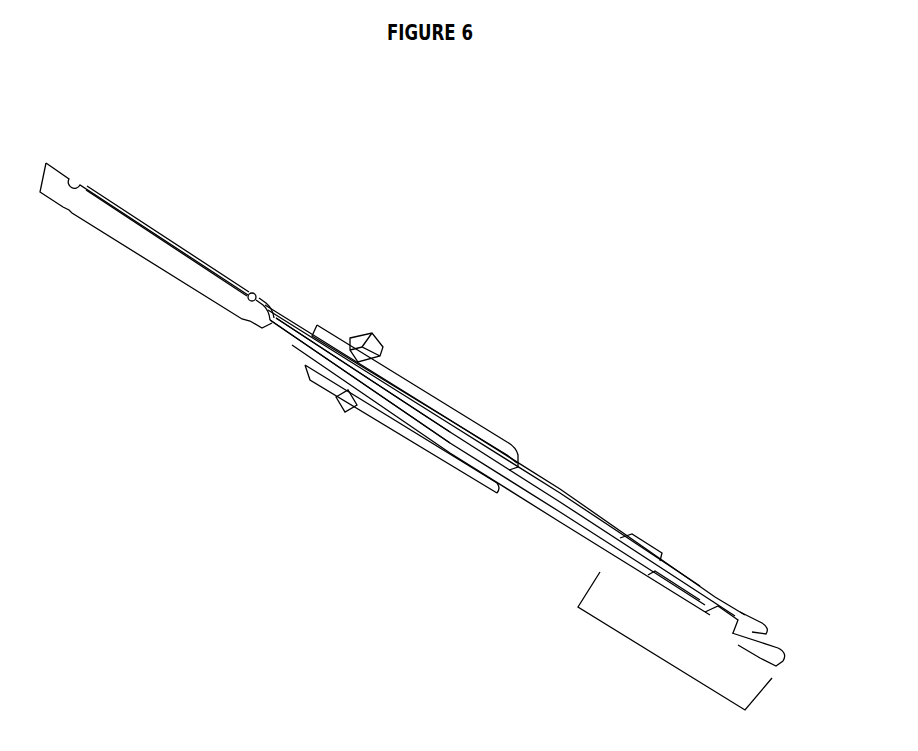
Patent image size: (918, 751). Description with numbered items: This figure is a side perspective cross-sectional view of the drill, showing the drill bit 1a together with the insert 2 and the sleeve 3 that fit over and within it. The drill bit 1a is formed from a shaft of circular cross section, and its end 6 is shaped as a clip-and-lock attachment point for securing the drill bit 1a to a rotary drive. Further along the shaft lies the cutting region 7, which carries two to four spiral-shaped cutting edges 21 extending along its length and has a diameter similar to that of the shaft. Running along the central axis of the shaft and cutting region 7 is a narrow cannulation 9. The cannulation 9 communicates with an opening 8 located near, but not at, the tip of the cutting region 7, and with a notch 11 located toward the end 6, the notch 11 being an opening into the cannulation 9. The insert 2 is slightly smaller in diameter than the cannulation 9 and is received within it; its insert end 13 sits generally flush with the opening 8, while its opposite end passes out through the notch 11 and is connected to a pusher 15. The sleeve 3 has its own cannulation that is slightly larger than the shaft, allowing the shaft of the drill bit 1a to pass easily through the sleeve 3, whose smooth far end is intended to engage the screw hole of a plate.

The drill bit 1a is at (404, 290).
The insert 2 is at (267, 318).
The sleeve 3 is at (400, 370).
The end of shaft 6 is at (65, 170).
The cutting region 7 is at (642, 650).
The opening 8 is at (745, 617).
The cannulation 9 is at (292, 335).
The notch 11 is at (268, 305).
The insert end 13 is at (763, 630).
The pusher 15 is at (263, 302).
The cutting edges 21 is at (642, 548).